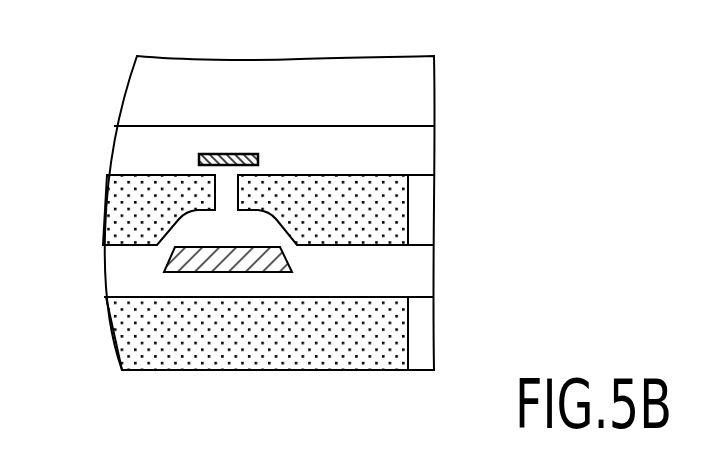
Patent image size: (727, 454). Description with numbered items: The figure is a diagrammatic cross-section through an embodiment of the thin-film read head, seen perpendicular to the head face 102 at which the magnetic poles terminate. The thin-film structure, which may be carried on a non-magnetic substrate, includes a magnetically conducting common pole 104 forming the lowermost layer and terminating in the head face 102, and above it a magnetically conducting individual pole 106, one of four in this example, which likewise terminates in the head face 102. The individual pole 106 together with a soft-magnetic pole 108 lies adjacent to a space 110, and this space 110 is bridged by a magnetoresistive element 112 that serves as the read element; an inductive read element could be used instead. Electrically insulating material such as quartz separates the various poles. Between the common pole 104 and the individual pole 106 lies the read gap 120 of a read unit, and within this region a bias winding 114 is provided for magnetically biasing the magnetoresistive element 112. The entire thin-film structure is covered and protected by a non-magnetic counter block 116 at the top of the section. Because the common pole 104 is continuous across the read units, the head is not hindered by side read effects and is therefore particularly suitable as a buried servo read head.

The head face 102 is at (118, 98).
The common pole 104 is at (375, 345).
The individual pole 106 is at (140, 210).
The soft-magnetic pole 108 is at (392, 213).
The space 110 is at (228, 197).
The magnetoresistive element 112 is at (228, 154).
The bias winding 114 is at (185, 260).
The counter block 116 is at (410, 89).
The read gap 120 is at (125, 283).